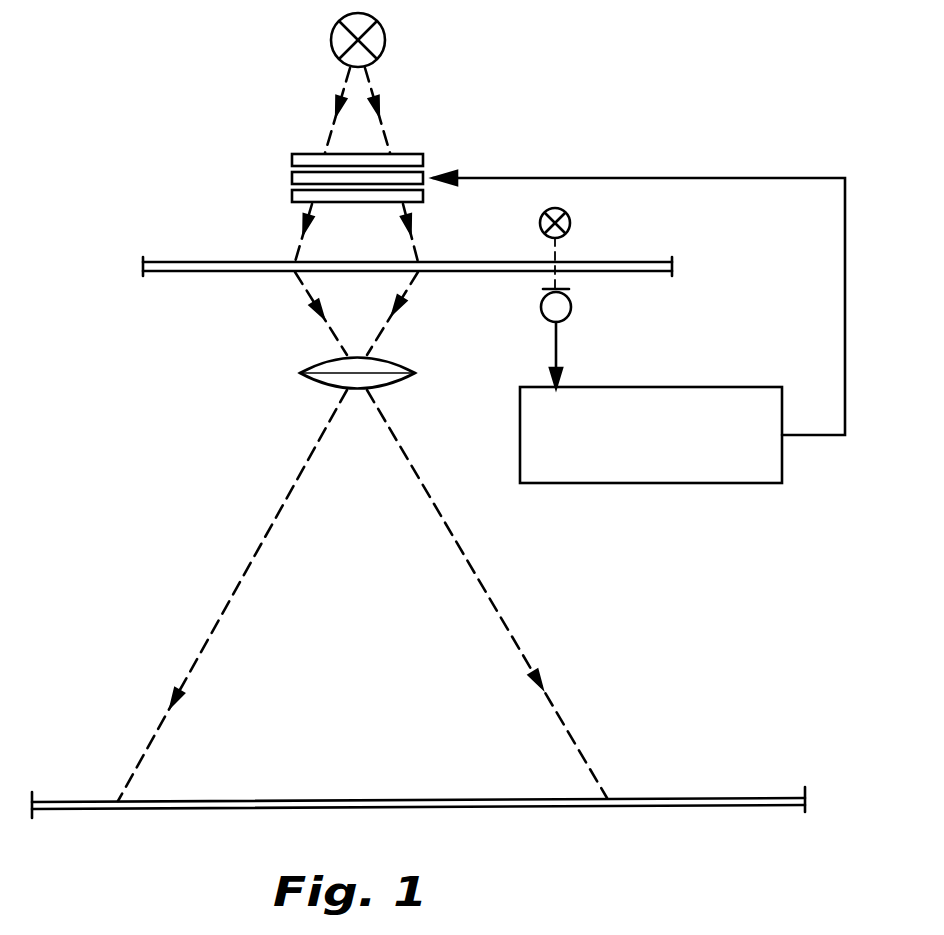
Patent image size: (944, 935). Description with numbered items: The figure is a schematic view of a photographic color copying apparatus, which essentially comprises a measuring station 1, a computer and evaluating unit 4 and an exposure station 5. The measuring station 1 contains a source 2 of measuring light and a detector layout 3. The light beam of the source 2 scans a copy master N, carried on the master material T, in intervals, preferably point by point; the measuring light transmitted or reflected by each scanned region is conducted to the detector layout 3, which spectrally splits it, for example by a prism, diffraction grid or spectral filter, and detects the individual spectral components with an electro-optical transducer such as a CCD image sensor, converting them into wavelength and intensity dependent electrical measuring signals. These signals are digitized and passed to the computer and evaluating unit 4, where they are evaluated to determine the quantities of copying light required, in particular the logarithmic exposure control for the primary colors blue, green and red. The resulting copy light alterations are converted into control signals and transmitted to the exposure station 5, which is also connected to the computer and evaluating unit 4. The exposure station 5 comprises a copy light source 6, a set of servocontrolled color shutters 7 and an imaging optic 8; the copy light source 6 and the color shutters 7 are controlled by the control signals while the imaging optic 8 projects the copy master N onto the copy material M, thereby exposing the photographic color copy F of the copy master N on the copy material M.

The measuring station 1 is at (578, 203).
The source of measuring light 2 is at (540, 222).
The detector layout 3 is at (548, 306).
The computer and evaluating unit 4 is at (728, 465).
The exposure station 5 is at (93, 37).
The copy light source 6 is at (377, 38).
The servocontrolled color shutters 7 is at (273, 147).
The imaging optic 8 is at (312, 384).
The master material T is at (237, 275).
The copy master N is at (326, 262).
The photographic copy F is at (424, 798).
The copy material M is at (735, 797).